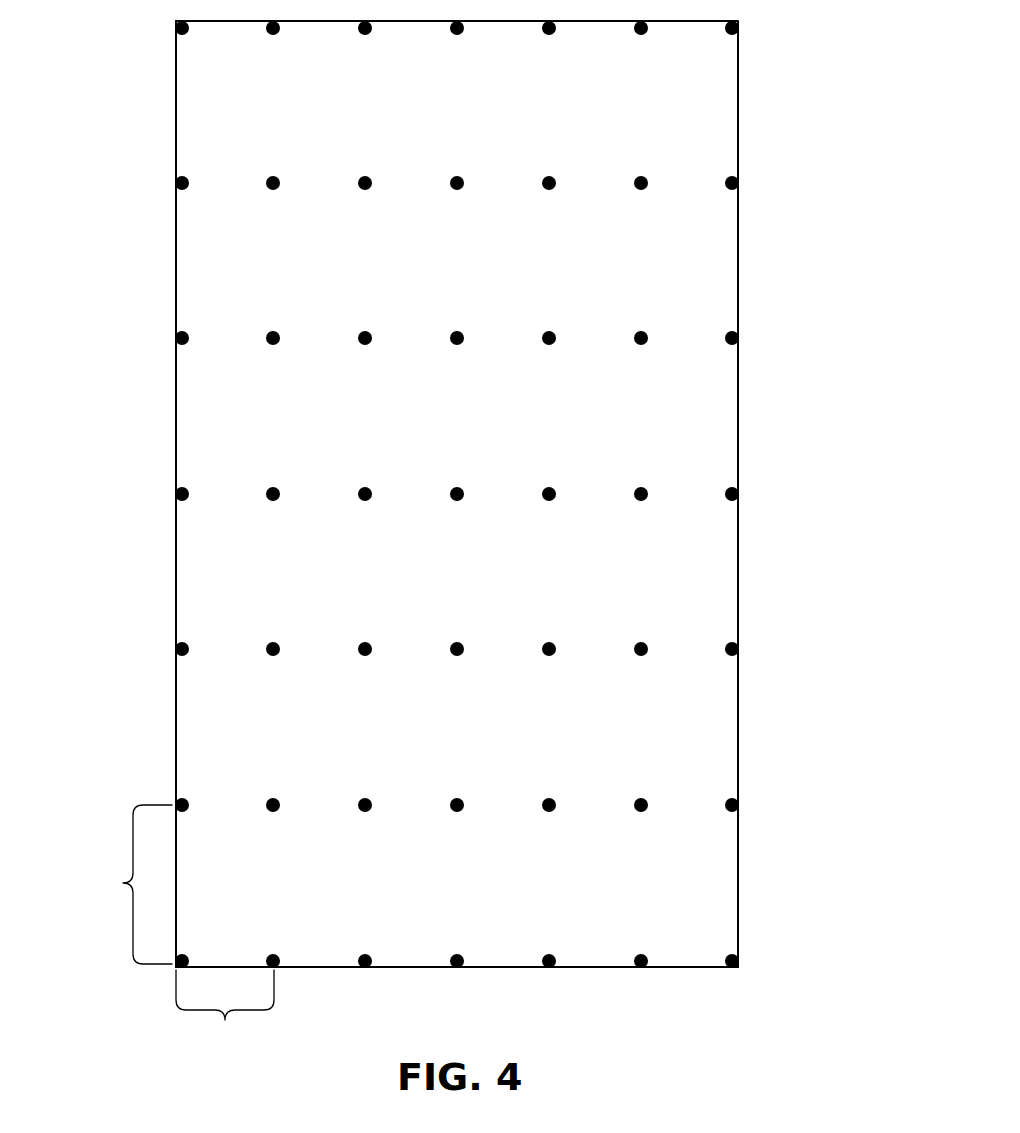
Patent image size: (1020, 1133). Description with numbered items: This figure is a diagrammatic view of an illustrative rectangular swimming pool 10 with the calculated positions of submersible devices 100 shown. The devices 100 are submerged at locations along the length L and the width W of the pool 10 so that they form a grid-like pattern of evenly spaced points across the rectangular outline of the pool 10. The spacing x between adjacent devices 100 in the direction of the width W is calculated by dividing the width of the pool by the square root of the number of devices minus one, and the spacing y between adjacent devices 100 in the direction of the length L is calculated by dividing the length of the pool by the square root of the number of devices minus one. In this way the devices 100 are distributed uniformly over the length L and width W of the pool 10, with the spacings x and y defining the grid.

The pool 10 is at (775, 272).
The devices 100 is at (549, 332).
The length L is at (156, 494).
The width W is at (457, 991).
The spacing in the direction of the width x is at (225, 1010).
The spacing in the direction of the length y is at (137, 884).